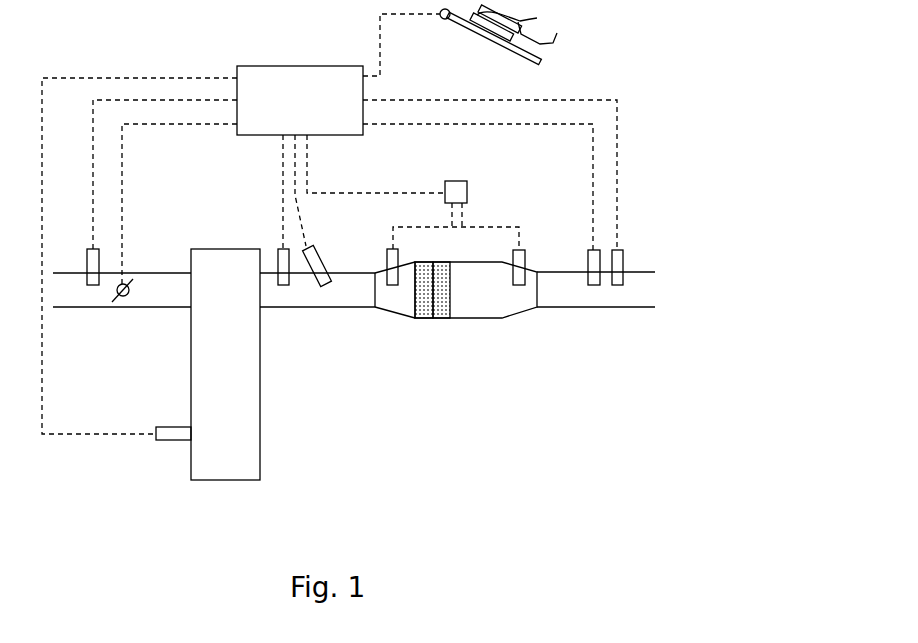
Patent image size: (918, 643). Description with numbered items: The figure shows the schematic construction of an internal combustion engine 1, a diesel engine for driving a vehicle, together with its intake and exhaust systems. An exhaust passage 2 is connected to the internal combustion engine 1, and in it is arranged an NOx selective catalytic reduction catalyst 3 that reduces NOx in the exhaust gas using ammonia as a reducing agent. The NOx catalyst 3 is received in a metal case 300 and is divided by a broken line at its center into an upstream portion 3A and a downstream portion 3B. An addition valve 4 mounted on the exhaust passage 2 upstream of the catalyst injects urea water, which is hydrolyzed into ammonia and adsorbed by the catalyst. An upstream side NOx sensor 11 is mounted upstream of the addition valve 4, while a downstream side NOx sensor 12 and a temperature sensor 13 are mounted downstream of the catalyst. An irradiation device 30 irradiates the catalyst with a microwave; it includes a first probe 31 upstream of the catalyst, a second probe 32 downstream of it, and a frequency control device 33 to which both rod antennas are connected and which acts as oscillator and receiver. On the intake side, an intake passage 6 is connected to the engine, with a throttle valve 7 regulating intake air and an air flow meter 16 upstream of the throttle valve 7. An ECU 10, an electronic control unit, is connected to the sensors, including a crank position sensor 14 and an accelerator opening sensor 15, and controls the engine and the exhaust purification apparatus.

The internal combustion engine 1 is at (260, 449).
The exhaust passage 2 is at (344, 310).
The NOx selective catalytic reduction catalyst 3 is at (387, 423).
The upstream portion 3A is at (420, 318).
The downstream portion 3B is at (438, 318).
The case 300 is at (483, 318).
The addition valve 4 is at (322, 262).
The intake passage 6 is at (93, 308).
The throttle valve 7 is at (122, 297).
The ECU 10 is at (248, 135).
The upstream side NOx sensor 11 is at (277, 250).
The downstream side NOx sensor 12 is at (587, 262).
The temperature sensor 13 is at (625, 262).
The crank position sensor 14 is at (170, 427).
The accelerator opening sensor 15 is at (441, 18).
The air flow meter 16 is at (88, 250).
The irradiation device 30 is at (496, 173).
The first probe 31 is at (386, 252).
The second probe 32 is at (526, 262).
The frequency control device 33 is at (467, 190).